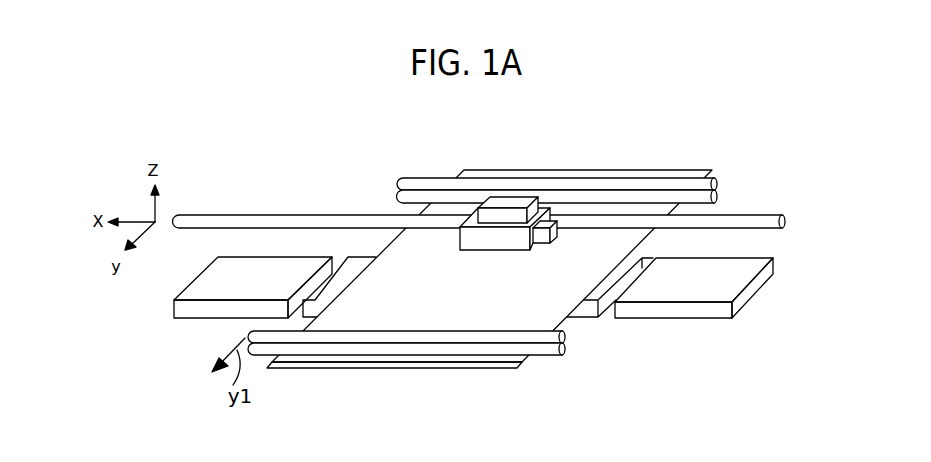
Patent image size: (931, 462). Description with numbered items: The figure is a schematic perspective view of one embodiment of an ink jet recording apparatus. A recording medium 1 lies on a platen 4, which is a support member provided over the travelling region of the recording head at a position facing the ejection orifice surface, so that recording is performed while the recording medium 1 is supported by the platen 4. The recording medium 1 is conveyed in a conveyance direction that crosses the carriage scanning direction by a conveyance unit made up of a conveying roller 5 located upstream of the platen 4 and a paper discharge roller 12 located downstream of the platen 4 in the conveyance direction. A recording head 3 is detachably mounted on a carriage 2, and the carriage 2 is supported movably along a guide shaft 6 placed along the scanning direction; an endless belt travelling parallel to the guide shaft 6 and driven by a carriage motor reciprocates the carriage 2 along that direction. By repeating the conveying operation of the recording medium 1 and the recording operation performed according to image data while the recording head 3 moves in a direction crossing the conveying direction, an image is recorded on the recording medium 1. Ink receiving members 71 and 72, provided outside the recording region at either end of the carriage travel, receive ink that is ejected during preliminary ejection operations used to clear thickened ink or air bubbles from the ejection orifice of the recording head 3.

The recording medium 1 is at (492, 358).
The carriage 2 is at (542, 210).
The recording head 3 is at (512, 202).
The platen 4 is at (588, 312).
The conveying roller 5 is at (413, 185).
The guide shaft 6 is at (350, 220).
The paper discharge roller 12 is at (553, 343).
The ink receiving member 71 is at (673, 307).
The ink receiving member 72 is at (197, 312).